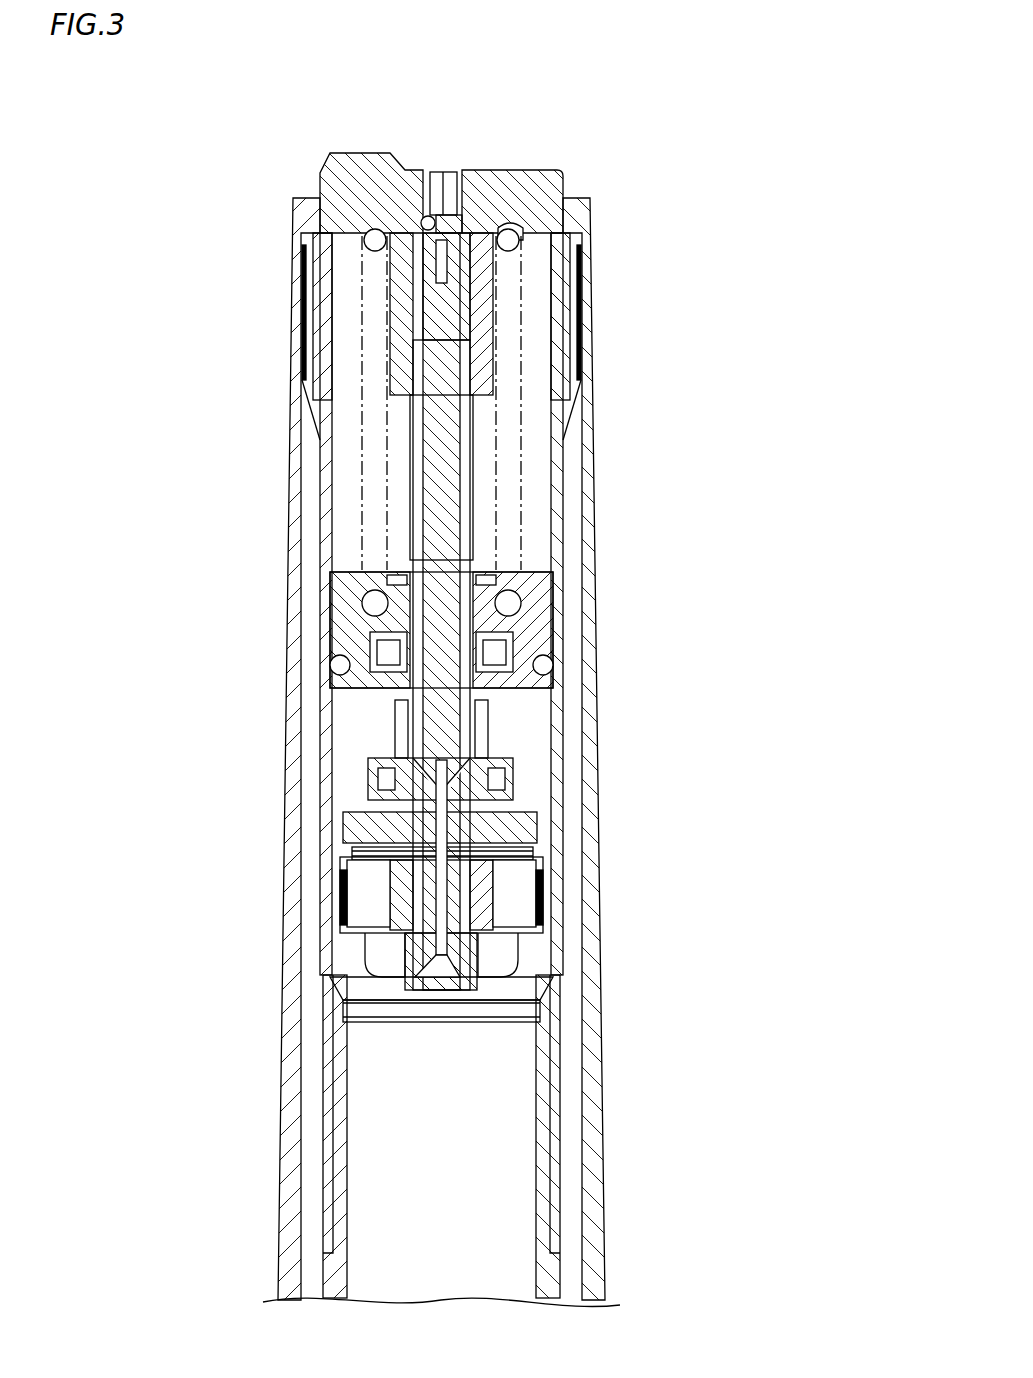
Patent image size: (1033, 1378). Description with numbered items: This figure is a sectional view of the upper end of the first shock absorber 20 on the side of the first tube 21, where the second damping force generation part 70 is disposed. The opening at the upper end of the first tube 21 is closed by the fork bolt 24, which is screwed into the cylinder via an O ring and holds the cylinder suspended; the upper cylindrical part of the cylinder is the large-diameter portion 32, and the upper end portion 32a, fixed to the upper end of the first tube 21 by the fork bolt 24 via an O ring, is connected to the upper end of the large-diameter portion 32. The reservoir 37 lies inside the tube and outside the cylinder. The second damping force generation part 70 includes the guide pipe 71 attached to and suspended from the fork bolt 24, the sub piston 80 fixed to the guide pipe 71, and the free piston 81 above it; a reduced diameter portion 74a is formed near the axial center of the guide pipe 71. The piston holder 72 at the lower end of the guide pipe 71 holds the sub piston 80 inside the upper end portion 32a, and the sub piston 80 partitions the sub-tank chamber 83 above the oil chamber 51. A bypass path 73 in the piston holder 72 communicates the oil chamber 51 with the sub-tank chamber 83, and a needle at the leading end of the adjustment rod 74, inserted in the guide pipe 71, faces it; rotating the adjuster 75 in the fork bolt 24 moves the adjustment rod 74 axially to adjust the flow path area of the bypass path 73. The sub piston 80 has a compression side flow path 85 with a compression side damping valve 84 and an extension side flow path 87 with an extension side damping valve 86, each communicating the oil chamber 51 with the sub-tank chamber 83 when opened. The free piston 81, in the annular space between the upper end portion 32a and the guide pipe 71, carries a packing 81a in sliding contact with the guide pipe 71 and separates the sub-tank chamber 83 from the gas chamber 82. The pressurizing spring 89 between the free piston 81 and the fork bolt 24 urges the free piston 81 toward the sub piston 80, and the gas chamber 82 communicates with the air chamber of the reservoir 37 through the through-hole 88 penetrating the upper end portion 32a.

The shock absorber 20 is at (763, 197).
The first tube 21 is at (290, 1145).
The fork bolt 24 is at (497, 172).
The large-diameter portion 32 is at (343, 1145).
The upper end portion 32a is at (325, 500).
The reservoir 37 is at (563, 1275).
The oil chamber 51 is at (388, 1275).
The second damping force generation part 70 is at (670, 545).
The guide pipe 71 is at (467, 440).
The piston holder 72 is at (478, 758).
The bypass path 73 is at (437, 980).
The adjustment rod 74 is at (470, 505).
The reduced diameter portion 74a is at (408, 478).
The adjuster 75 is at (430, 170).
The sub piston 80 is at (548, 890).
The free piston 81 is at (530, 635).
The packing 81a is at (497, 690).
The gas chamber 82 is at (347, 350).
The sub-tank chamber 83 is at (363, 735).
The compression side damping valve 84 is at (540, 850).
The compression side flow path 85 is at (370, 885).
The extension side damping valve 86 is at (343, 937).
The extension side flow path 87 is at (515, 912).
The through-hole 88 is at (320, 437).
The pressurizing spring 89 is at (375, 605).